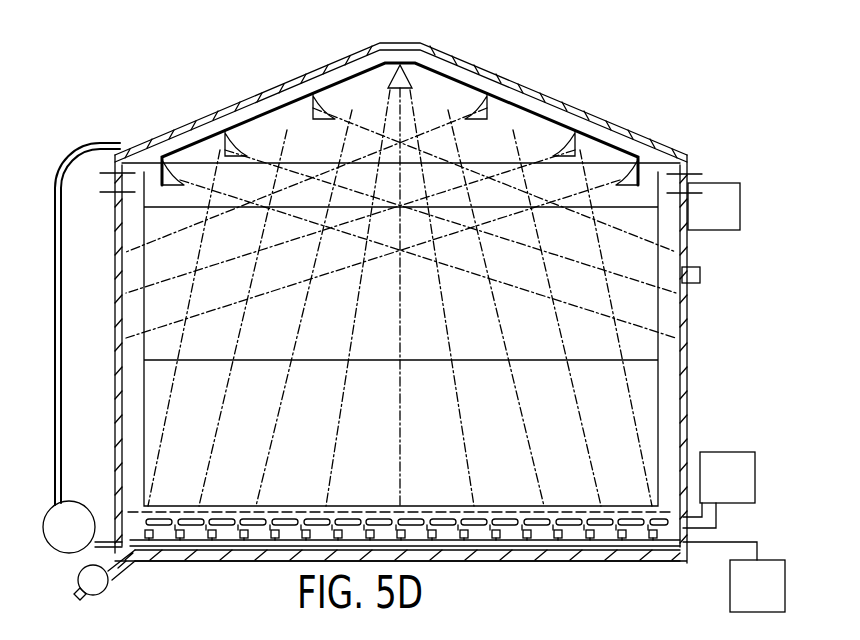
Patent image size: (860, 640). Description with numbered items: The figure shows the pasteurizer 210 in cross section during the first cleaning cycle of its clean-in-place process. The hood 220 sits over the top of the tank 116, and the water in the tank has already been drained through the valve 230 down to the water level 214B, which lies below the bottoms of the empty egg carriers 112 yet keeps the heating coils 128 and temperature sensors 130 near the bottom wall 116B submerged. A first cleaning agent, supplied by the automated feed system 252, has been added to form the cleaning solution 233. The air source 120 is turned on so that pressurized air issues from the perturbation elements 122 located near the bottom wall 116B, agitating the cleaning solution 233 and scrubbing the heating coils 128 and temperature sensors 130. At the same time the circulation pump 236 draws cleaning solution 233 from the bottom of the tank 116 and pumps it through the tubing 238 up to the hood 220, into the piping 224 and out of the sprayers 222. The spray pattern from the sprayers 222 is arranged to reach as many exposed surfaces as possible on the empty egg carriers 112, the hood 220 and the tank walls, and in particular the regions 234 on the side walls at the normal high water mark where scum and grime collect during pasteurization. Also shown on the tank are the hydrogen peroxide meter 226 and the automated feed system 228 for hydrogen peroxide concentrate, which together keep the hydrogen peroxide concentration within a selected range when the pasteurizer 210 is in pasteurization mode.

The pasteurizer 210 is at (553, 93).
The tubing 238 is at (63, 178).
The tank 116 is at (113, 245).
The bottom wall 116B is at (443, 557).
The carriers 112 is at (143, 288).
The hood 220 is at (287, 85).
The piping 224 is at (253, 110).
The sprayers 222 is at (178, 165).
The regions 234 is at (130, 183).
The water level 214B is at (620, 503).
The temperature sensors 130 is at (133, 512).
The perturbation elements 122 is at (575, 547).
The heating coils 128 is at (632, 528).
The circulation pump 236 is at (55, 548).
The valve 230 is at (108, 590).
The hydrogen peroxide meter 226 is at (693, 283).
The automated feed system for hydrogen peroxide concentrate 228 is at (714, 206).
The automated feed system for the first cleaning agent 252 is at (719, 490).
The cleaning solution 233 is at (690, 537).
The air source 120 is at (757, 586).